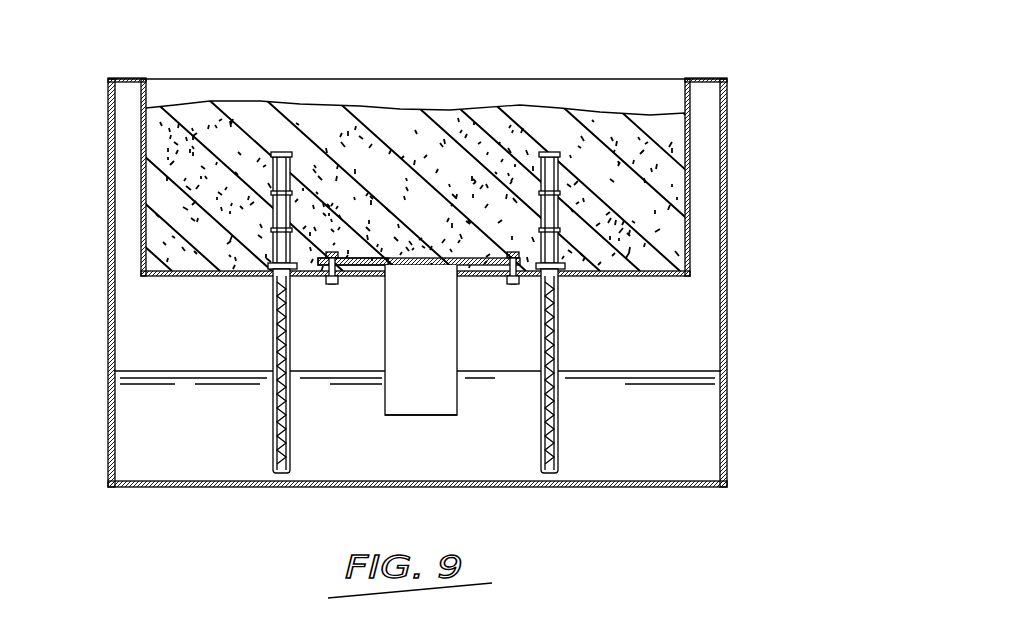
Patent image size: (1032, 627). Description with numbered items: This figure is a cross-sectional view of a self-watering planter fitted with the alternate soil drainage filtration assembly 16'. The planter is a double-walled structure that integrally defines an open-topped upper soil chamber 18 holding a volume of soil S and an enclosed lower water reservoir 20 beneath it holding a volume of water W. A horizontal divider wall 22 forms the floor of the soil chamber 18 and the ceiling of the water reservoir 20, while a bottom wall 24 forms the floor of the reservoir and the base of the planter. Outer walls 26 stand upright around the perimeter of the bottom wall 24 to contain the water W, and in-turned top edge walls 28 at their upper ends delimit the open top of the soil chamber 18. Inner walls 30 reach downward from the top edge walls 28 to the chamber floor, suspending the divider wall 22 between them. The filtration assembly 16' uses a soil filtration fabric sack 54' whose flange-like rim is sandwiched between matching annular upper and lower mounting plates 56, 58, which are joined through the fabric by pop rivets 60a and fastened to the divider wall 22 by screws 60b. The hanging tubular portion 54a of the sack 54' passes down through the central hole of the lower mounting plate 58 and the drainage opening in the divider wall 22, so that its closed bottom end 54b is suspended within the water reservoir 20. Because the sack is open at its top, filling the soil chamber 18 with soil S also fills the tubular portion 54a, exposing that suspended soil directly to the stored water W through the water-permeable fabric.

The soil drainage filtration assembly 16' is at (429, 242).
The upper soil chamber 18 is at (592, 95).
The lower water reservoir 20 is at (698, 330).
The divider wall 22 is at (622, 277).
The bottom wall 24 is at (629, 488).
The outer walls 26 is at (113, 250).
The top edge walls 28 is at (124, 78).
The inner walls 30 is at (147, 98).
The soil S is at (232, 110).
The water W is at (705, 422).
The soil filtration fabric sack 54' is at (392, 340).
The tubular portion 54a is at (443, 365).
The closed bottom end 54b is at (421, 420).
The upper mounting plate 56 is at (355, 257).
The lower mounting plate 58 is at (370, 275).
The pop rivets 60a is at (470, 257).
The screws 60b is at (332, 273).